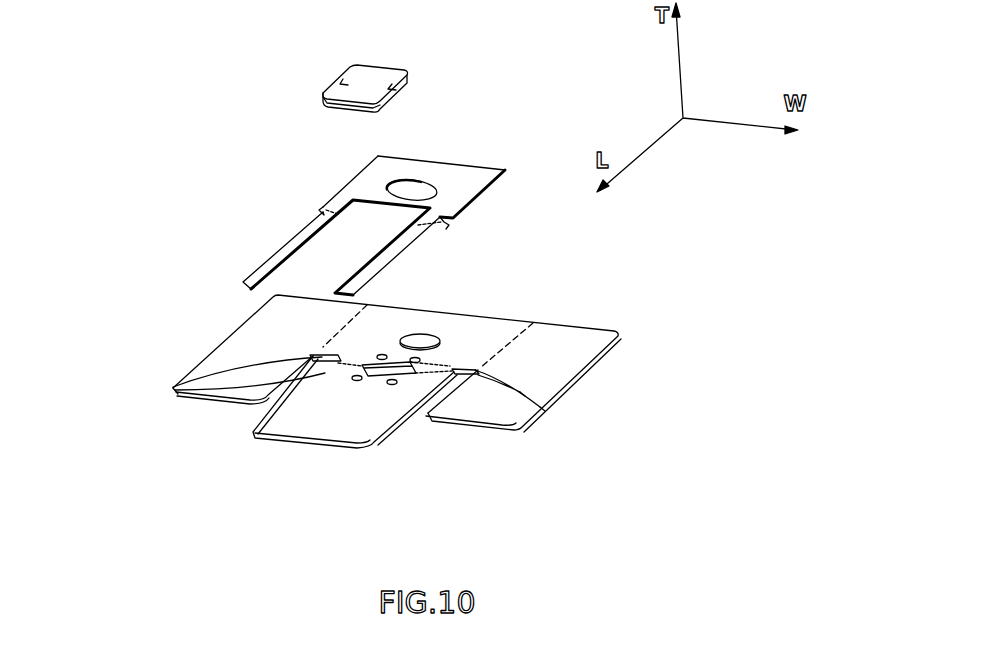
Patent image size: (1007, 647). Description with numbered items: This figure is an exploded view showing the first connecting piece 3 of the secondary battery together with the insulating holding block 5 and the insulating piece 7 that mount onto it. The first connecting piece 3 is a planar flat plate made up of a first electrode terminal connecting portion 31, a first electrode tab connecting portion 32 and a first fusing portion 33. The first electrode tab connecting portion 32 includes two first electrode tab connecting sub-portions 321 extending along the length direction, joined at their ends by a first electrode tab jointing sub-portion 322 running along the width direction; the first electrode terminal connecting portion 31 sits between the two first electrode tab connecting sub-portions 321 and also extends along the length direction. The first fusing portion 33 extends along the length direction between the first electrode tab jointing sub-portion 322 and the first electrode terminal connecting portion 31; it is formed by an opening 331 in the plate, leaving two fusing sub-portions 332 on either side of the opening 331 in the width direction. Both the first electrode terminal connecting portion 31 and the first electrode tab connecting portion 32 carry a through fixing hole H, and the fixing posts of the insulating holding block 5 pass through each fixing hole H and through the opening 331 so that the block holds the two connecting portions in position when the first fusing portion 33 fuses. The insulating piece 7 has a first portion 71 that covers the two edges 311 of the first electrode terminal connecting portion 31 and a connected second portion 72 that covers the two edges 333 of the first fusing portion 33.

The first connecting piece 3 is at (427, 393).
The insulating holding block 5 is at (358, 90).
The insulating piece 7 is at (341, 202).
The first portion of insulating piece 71 is at (373, 263).
The second portion of insulating piece 72 is at (418, 225).
The fixing hole H is at (383, 355).
The first electrode terminal connecting portion 31 is at (287, 425).
The edges of first electrode terminal connecting portion 311 is at (173, 388).
The first electrode tab connecting portion 32 is at (444, 339).
The first electrode tab connecting sub-portions 321 is at (218, 362).
The first electrode tab jointing sub-portion 322 is at (447, 343).
The first fusing portion 33 is at (485, 444).
The opening 331 is at (387, 370).
The fusing sub-portions 332 is at (420, 375).
The edges of first fusing portion 333 is at (520, 392).